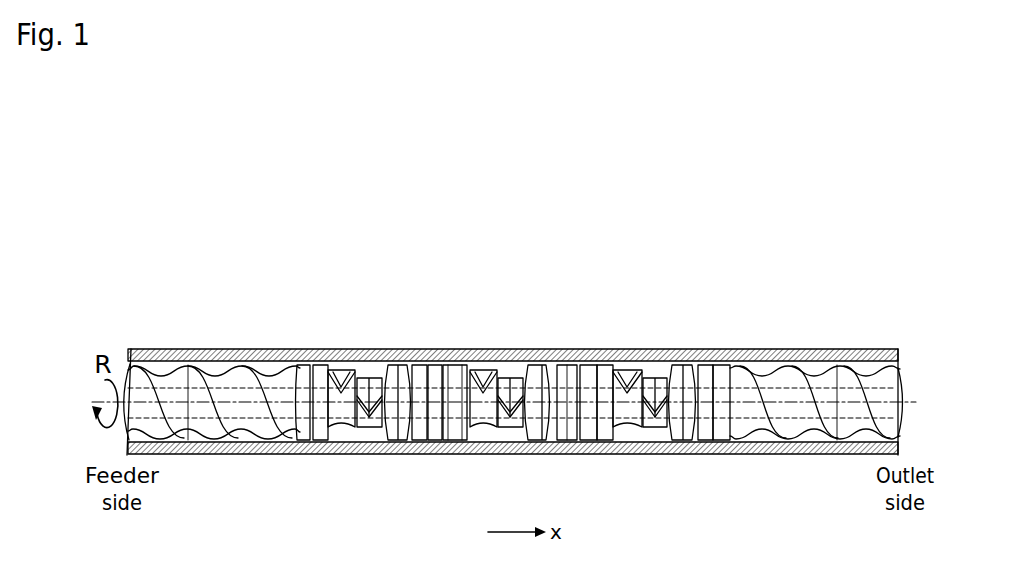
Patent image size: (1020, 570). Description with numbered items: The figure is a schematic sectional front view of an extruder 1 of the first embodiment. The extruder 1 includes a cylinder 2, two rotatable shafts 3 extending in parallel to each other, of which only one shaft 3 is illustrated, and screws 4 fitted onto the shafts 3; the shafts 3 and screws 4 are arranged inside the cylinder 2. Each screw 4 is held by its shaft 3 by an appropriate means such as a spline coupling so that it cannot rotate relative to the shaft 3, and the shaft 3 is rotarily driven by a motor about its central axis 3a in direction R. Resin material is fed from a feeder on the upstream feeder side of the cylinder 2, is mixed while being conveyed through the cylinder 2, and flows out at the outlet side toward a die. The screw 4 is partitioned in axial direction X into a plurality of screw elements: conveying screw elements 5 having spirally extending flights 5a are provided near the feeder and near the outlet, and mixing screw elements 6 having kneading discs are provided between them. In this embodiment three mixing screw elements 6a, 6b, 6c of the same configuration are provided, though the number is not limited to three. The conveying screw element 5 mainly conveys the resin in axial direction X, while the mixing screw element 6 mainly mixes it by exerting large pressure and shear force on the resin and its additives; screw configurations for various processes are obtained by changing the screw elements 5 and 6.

The extruder 1 is at (511, 293).
The cylinder 2 is at (570, 352).
The shaft 3 is at (176, 350).
The central axis 3a is at (912, 400).
The screw 4 is at (657, 366).
The conveying screw element 5 is at (158, 441).
The flight 5a is at (238, 352).
The mixing screw element 6 is at (529, 439).
The first mixing screw element 6a is at (393, 437).
The second mixing screw element 6b is at (522, 432).
The third mixing screw element 6c is at (662, 432).